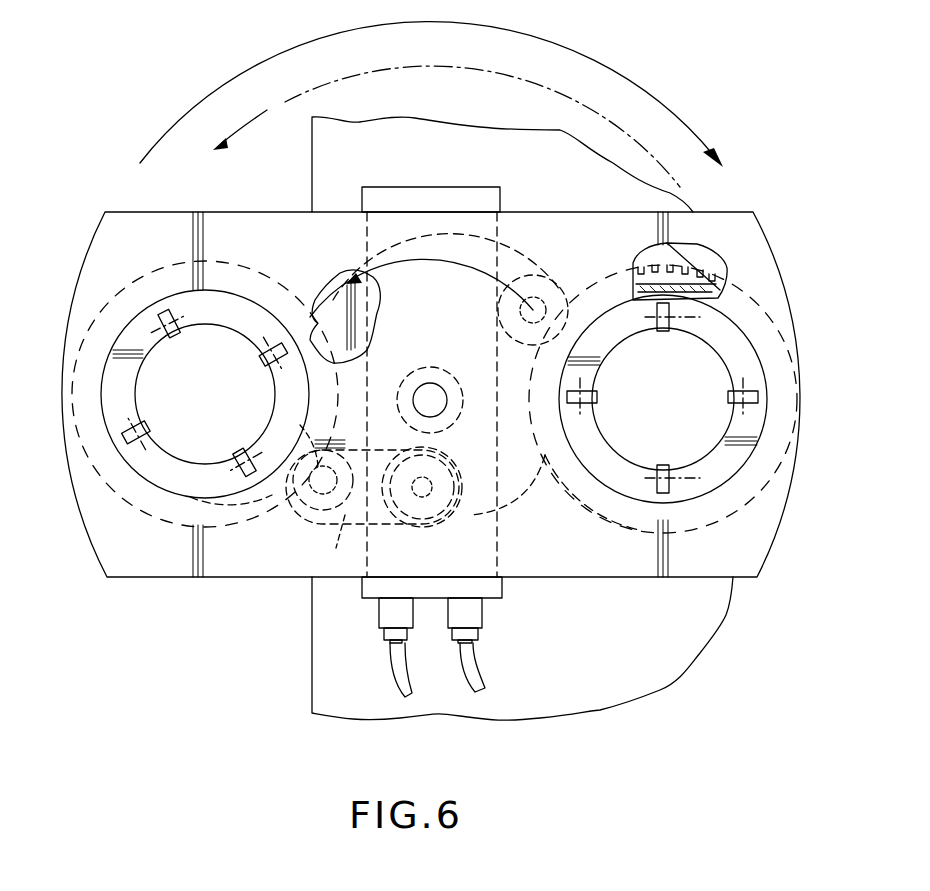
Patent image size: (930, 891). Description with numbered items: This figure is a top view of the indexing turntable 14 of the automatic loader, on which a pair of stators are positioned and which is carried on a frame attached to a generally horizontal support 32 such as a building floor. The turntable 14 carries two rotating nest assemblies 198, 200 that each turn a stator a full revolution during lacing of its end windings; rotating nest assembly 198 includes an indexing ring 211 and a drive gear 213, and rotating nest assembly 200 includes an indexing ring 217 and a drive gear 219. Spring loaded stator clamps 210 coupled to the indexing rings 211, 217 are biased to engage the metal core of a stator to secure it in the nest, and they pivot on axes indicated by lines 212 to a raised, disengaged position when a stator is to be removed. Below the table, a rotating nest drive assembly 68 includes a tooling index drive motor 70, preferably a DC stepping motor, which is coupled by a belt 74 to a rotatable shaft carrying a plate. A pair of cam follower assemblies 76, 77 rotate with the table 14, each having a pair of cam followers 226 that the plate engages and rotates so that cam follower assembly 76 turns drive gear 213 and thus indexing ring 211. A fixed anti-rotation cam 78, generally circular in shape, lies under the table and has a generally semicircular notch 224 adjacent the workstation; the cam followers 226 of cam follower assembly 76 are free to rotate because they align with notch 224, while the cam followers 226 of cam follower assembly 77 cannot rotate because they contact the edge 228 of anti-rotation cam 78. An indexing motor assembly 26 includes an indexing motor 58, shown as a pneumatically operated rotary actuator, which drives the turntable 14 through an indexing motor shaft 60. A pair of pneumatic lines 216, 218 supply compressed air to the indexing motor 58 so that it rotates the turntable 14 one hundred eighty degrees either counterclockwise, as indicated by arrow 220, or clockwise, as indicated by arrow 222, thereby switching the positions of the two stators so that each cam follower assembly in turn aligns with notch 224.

The indexing turntable 14 is at (105, 583).
The indexing motor assembly 26 is at (358, 598).
The generally horizontal support 32 is at (722, 620).
The indexing motor 58 is at (508, 612).
The indexing motor shaft 60 is at (440, 410).
The rotating nest drive assembly 68 is at (463, 524).
The tooling index drive motor 70 is at (422, 520).
The belt 74 is at (331, 545).
The cam follower assembly 76 is at (268, 503).
The cam follower assembly 77 is at (563, 268).
The anti-rotation cam 78 is at (552, 498).
The rotating nest assembly 198 is at (134, 268).
The rotating nest assembly 200 is at (797, 331).
The spring loaded stator clamps 210 is at (267, 350).
The indexing ring 211 is at (117, 375).
The pivot axes 212 is at (143, 310).
The drive gear 213 is at (343, 275).
The pneumatic line 216 is at (400, 680).
The indexing ring 217 is at (757, 430).
The pneumatic line 218 is at (480, 677).
The drive gear 219 is at (700, 256).
The arrow 220 is at (258, 110).
The arrow 222 is at (657, 97).
The notch 224 is at (300, 425).
The cam followers 226 is at (531, 295).
The edge 228 is at (500, 516).